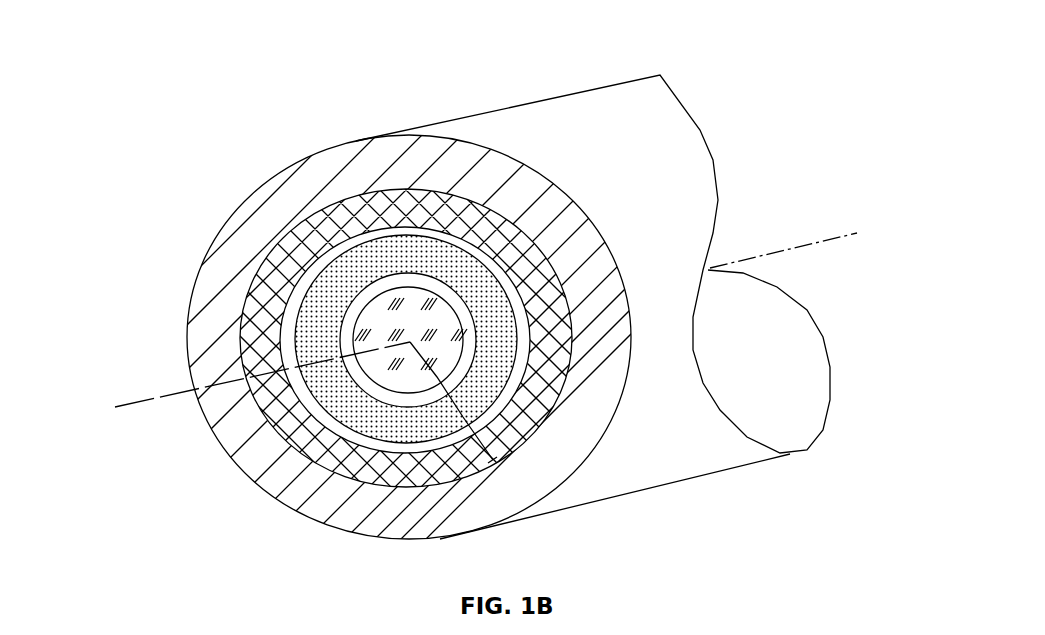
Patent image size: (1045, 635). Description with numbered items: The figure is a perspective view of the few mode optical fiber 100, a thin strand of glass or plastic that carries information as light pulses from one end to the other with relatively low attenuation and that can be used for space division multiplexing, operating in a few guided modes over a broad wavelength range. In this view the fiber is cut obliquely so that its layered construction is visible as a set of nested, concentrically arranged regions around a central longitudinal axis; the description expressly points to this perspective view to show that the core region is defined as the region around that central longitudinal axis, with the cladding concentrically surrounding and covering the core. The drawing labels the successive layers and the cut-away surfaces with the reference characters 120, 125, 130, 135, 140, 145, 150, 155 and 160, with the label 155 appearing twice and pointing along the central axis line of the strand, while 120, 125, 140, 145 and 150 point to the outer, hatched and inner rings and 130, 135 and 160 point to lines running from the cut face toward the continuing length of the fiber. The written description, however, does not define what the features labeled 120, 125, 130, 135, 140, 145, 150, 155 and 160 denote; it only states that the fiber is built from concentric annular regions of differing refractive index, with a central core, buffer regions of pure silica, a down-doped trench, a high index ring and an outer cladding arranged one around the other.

The few mode optical fiber 100 is at (46, 40).
The cable 120 is at (350, 543).
The outer jacket 125 is at (380, 168).
The first conductor line 130 is at (423, 322).
The second conductor line 135 is at (462, 367).
The shield layer 140 is at (387, 257).
The braided layer 145 is at (303, 287).
The insulation layer 150 is at (297, 338).
The core conductor 155 is at (157, 398).
The drain line 160 is at (410, 342).